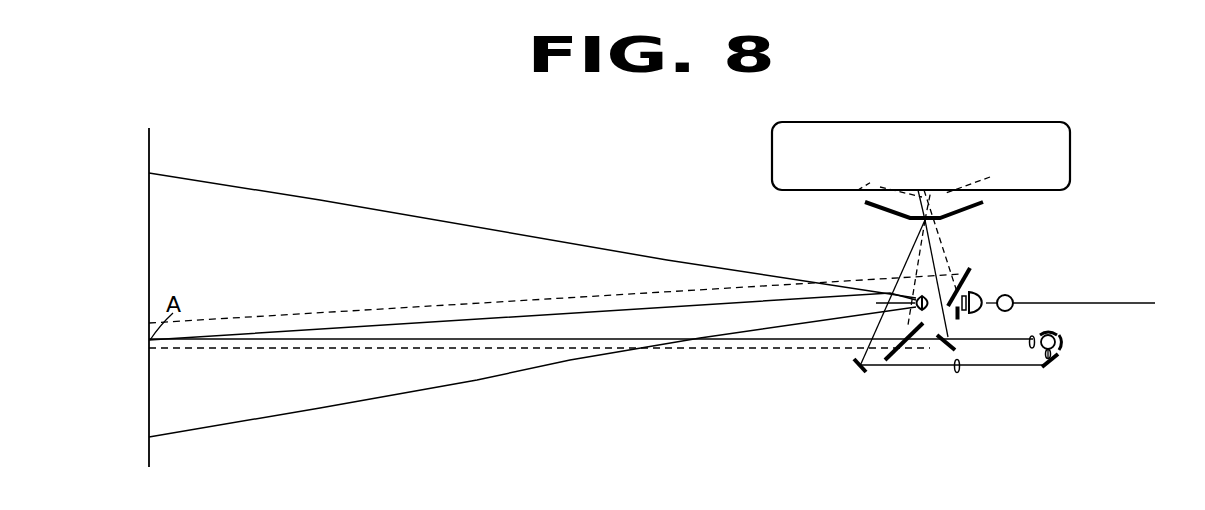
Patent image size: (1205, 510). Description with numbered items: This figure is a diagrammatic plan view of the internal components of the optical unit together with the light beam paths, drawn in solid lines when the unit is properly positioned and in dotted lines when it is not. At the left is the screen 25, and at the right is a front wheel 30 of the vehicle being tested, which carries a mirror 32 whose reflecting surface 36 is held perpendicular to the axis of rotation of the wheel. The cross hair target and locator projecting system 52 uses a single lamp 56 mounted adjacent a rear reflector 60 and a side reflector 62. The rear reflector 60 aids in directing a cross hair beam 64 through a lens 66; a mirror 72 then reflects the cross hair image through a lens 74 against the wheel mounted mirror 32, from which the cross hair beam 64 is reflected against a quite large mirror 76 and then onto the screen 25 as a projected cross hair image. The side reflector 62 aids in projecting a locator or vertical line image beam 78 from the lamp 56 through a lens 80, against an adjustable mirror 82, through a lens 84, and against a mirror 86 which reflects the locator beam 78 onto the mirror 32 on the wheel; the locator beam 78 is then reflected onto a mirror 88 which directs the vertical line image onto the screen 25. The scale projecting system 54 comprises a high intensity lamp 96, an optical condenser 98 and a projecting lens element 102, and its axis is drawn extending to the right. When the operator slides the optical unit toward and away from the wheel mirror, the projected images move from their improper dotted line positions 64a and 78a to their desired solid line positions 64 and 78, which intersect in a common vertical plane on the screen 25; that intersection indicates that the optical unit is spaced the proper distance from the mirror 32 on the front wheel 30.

The screen 25 is at (149, 223).
The front wheel 30 is at (913, 125).
The mirror 32 is at (858, 190).
The reflecting surface 36 is at (908, 222).
The cross hair target and locator projecting system 52 is at (1133, 336).
The scale projecting system 54 is at (1036, 257).
The lamp 56 is at (1065, 342).
The rear reflector 60 is at (1060, 350).
The side reflector 62 is at (1050, 333).
The cross hair beam 64 is at (443, 340).
The improper dotted line position of cross hair beam 64a is at (370, 351).
The lens 66 is at (1030, 343).
The mirror 72 is at (954, 364).
The lens 74 is at (938, 331).
The mirror 76 is at (904, 352).
The locator beam 78 is at (435, 322).
The improper dotted line position of locator beam 78a is at (500, 300).
The lens 80 is at (1046, 359).
The adjustable mirror 82 is at (1055, 365).
The lens 84 is at (957, 373).
The mirror 86 is at (856, 368).
The mirror 88 is at (962, 272).
The lamp 96 is at (1012, 300).
The optical condenser 98 is at (978, 291).
The projecting lens element 102 is at (912, 306).